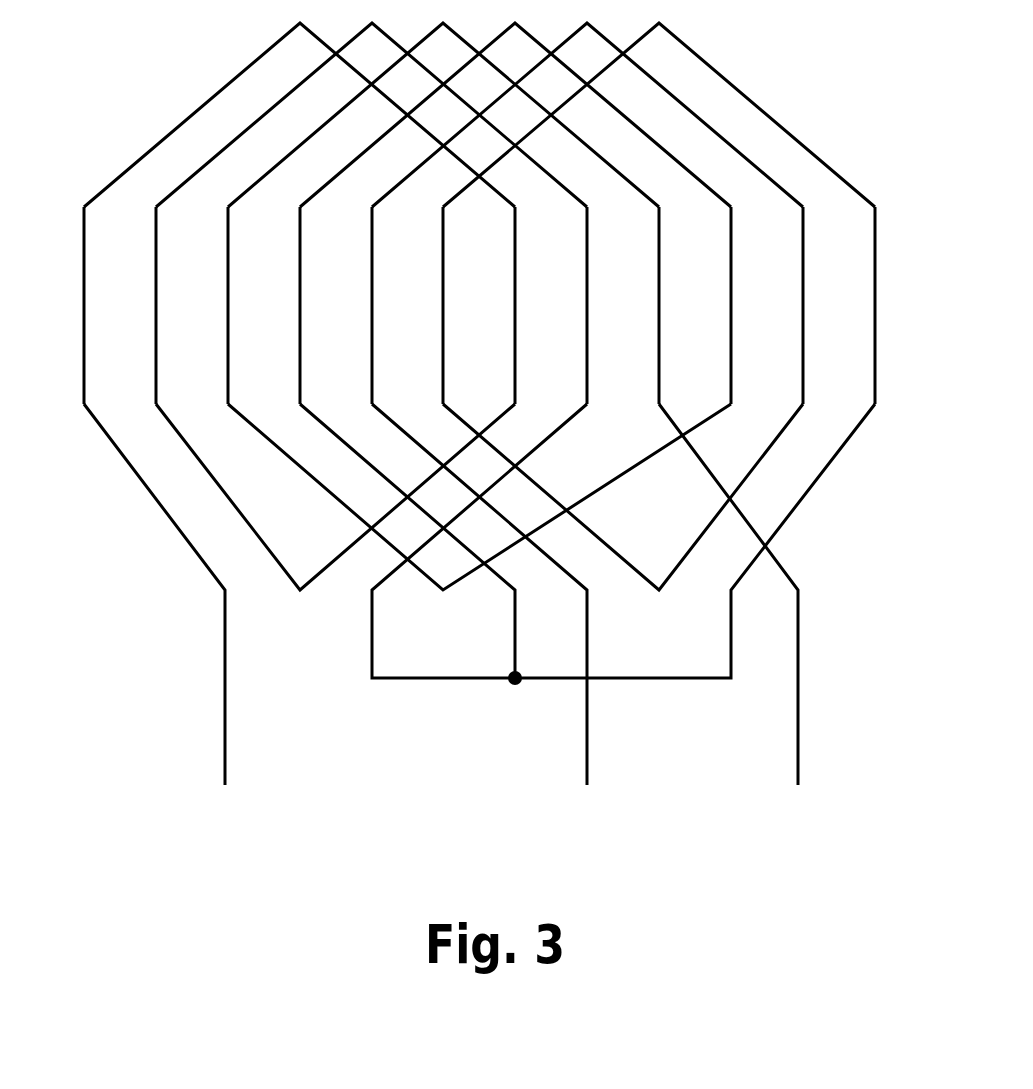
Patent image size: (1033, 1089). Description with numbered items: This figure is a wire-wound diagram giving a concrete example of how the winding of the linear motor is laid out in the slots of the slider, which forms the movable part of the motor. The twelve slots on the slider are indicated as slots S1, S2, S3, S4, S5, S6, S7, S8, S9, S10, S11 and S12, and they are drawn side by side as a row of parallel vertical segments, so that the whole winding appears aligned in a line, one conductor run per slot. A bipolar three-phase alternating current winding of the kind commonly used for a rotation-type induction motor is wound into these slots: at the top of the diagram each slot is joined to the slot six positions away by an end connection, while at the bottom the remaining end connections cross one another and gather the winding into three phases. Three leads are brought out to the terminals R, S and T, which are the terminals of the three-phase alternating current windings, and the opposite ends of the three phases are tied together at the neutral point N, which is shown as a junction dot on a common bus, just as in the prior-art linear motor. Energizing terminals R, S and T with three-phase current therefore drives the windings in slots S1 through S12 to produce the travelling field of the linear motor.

The slot S1 is at (101, 305).
The slot S2 is at (173, 305).
The slot S3 is at (245, 305).
The slot S4 is at (317, 305).
The slot S5 is at (389, 305).
The slot S6 is at (460, 305).
The slot S7 is at (532, 305).
The slot S8 is at (604, 305).
The slot S9 is at (676, 305).
The slot S10 is at (756, 305).
The slot S11 is at (828, 305).
The slot S12 is at (901, 305).
The terminal R is at (161, 615).
The terminal S is at (484, 615).
The terminal T is at (733, 615).
The neutral point N is at (515, 699).